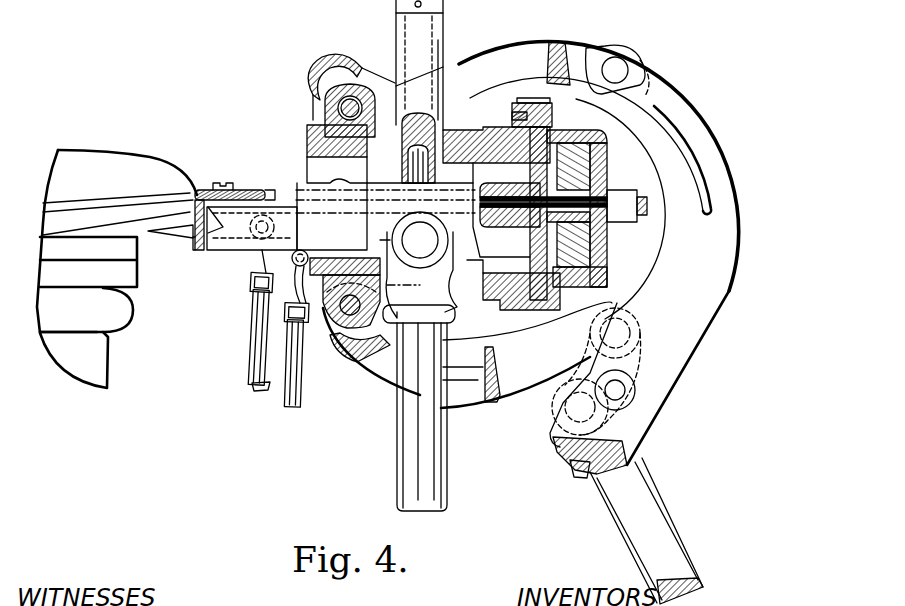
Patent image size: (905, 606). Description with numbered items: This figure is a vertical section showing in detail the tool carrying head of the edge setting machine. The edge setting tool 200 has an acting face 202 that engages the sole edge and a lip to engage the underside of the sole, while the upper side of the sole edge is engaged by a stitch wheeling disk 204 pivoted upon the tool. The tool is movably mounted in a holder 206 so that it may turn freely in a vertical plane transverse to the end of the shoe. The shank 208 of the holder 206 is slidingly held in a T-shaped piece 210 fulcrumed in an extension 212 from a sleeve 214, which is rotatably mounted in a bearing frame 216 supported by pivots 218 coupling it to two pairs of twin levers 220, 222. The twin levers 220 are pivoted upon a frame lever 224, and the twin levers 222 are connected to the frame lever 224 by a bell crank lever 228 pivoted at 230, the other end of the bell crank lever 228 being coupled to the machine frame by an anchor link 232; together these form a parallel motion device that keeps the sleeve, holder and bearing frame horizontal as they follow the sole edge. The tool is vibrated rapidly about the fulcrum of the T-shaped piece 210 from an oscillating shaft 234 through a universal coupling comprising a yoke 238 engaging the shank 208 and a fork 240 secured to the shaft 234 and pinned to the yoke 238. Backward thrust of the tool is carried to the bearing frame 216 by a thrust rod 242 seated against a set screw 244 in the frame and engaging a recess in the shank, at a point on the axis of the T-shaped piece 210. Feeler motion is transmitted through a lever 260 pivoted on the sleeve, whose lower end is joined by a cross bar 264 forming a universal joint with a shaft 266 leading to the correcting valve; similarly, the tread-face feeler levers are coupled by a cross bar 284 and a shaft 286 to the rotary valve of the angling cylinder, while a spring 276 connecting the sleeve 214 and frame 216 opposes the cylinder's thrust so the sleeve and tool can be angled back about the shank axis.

The edge setting tool 200 is at (210, 262).
The acting face 202 is at (193, 223).
The stitch wheeling disk 204 is at (200, 193).
The holder 206 is at (230, 245).
The shank 208 is at (232, 186).
The T-shaped piece 210 is at (300, 185).
The extension 212 is at (396, 33).
The sleeve 214 is at (312, 138).
The bearing frame 216 is at (318, 118).
The pivots 218 is at (598, 60).
The twin levers 220 is at (513, 53).
The twin levers 222 is at (517, 377).
The frame lever 224 is at (695, 299).
The bell crank lever 228 is at (637, 363).
The pivot 230 is at (628, 397).
The anchor link 232 is at (650, 527).
The shaft 234 is at (423, 483).
The yoke 238 is at (480, 243).
The fork 240 is at (403, 335).
The thrust rod 242 is at (630, 187).
The set screw 244 is at (645, 210).
The lever 260 is at (258, 350).
The cross bar 264 is at (300, 307).
The shaft 266 is at (290, 413).
The spring 276 is at (573, 153).
The cross bar 284 is at (258, 292).
The shaft 286 is at (257, 372).